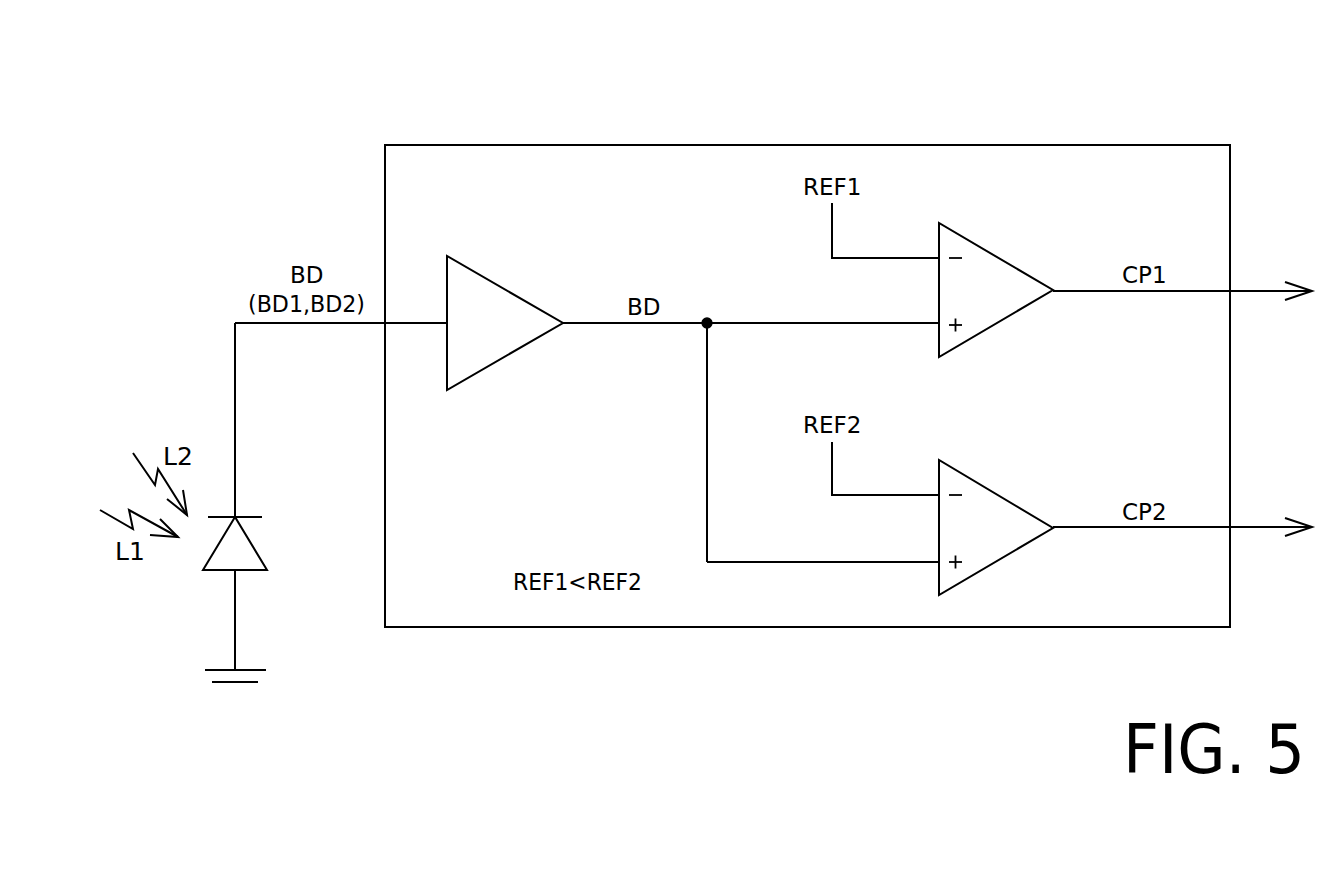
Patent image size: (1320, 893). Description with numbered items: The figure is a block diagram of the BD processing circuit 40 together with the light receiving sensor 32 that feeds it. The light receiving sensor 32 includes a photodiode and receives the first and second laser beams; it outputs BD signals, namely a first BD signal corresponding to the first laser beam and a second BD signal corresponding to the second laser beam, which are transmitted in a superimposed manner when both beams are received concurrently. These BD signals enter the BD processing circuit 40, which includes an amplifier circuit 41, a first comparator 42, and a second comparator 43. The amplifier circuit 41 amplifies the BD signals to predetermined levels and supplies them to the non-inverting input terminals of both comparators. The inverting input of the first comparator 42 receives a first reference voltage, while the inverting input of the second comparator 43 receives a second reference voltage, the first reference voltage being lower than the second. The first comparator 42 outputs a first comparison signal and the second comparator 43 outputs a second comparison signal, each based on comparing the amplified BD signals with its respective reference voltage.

The light receiving sensor 32 is at (250, 538).
The BD processing circuit 40 is at (1097, 145).
The amplifier circuit 41 is at (500, 285).
The first comparator 42 is at (997, 255).
The second comparator 43 is at (997, 493).